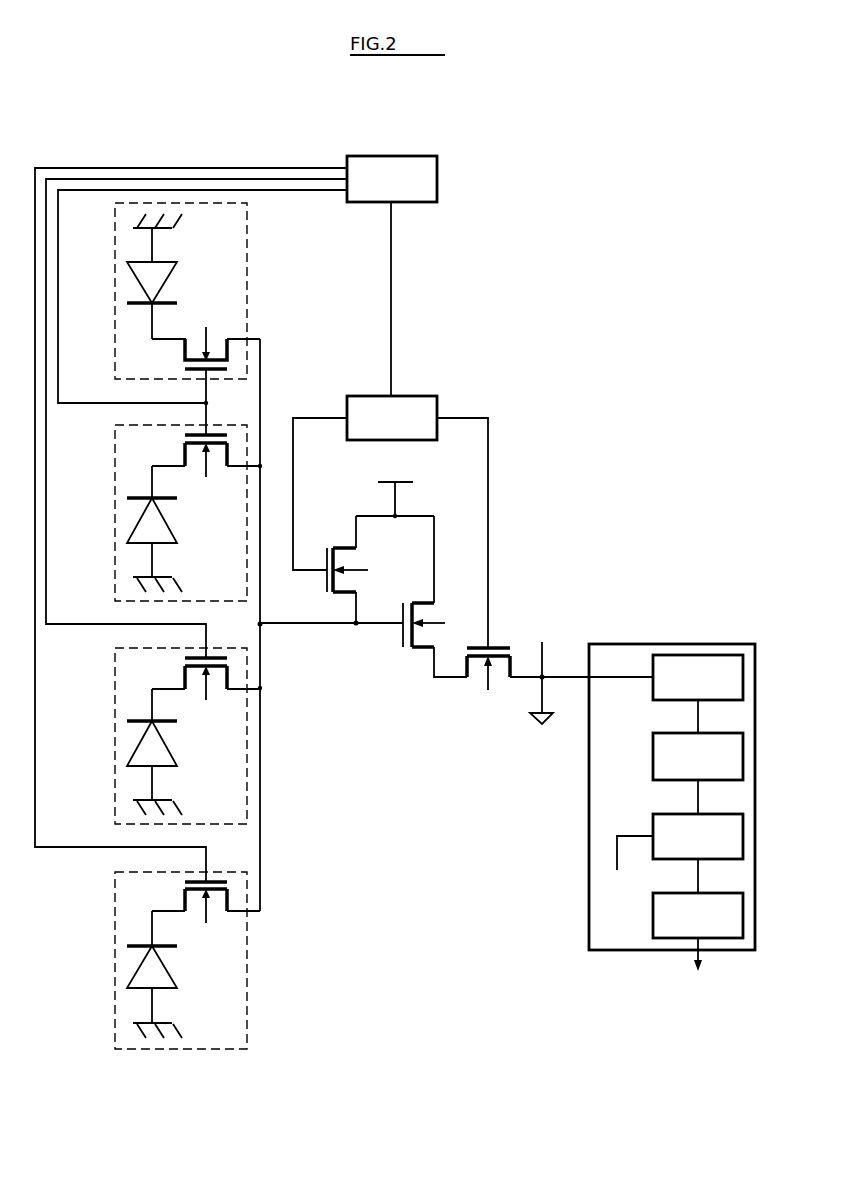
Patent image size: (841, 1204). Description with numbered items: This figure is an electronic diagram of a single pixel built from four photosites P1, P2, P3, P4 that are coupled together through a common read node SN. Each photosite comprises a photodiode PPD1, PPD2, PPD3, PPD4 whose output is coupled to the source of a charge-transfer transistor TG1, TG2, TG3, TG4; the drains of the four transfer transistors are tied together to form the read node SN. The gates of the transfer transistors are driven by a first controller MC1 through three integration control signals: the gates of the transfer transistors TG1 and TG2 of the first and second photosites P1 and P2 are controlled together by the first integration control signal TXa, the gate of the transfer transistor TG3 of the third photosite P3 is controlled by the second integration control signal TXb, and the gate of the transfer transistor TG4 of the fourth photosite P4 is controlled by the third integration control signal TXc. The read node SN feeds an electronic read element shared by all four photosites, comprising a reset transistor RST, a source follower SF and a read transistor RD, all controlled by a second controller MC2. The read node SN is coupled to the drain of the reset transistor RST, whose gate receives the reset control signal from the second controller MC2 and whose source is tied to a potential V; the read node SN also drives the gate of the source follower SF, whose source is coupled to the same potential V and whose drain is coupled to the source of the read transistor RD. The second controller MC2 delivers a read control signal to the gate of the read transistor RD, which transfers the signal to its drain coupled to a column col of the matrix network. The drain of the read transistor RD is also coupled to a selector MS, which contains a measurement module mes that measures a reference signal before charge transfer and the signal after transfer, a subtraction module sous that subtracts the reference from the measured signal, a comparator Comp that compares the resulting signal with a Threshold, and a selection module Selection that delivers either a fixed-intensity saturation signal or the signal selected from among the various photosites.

The first photosite P1 is at (115, 292).
The second photosite P2 is at (115, 513).
The third photosite P3 is at (115, 736).
The fourth photosite P4 is at (115, 960).
The photodiode PPD1 is at (166, 283).
The photodiode PPD2 is at (166, 520).
The photodiode PPD3 is at (166, 743).
The photodiode PPD4 is at (166, 968).
The charge-transfer transistor TG1 is at (186, 355).
The charge-transfer transistor TG2 is at (186, 450).
The charge-transfer transistor TG3 is at (186, 673).
The charge-transfer transistor TG4 is at (186, 896).
The first integration control signal TXa is at (202, 297).
The second integration control signal TXb is at (196, 418).
The third integration control signal TXc is at (191, 525).
The first controller MC1 is at (392, 179).
The second controller MC2 is at (392, 418).
The reset transistor RST is at (337, 548).
The source follower SF is at (401, 640).
The read node SN is at (265, 620).
The read transistor RD is at (505, 646).
The column col is at (543, 675).
The potential V is at (395, 488).
The selector MS is at (668, 643).
The measurement module mes is at (698, 677).
The subtraction module sous is at (698, 756).
The comparator Comp is at (698, 836).
The selection module Selection is at (698, 915).
The threshold Threshold is at (636, 864).